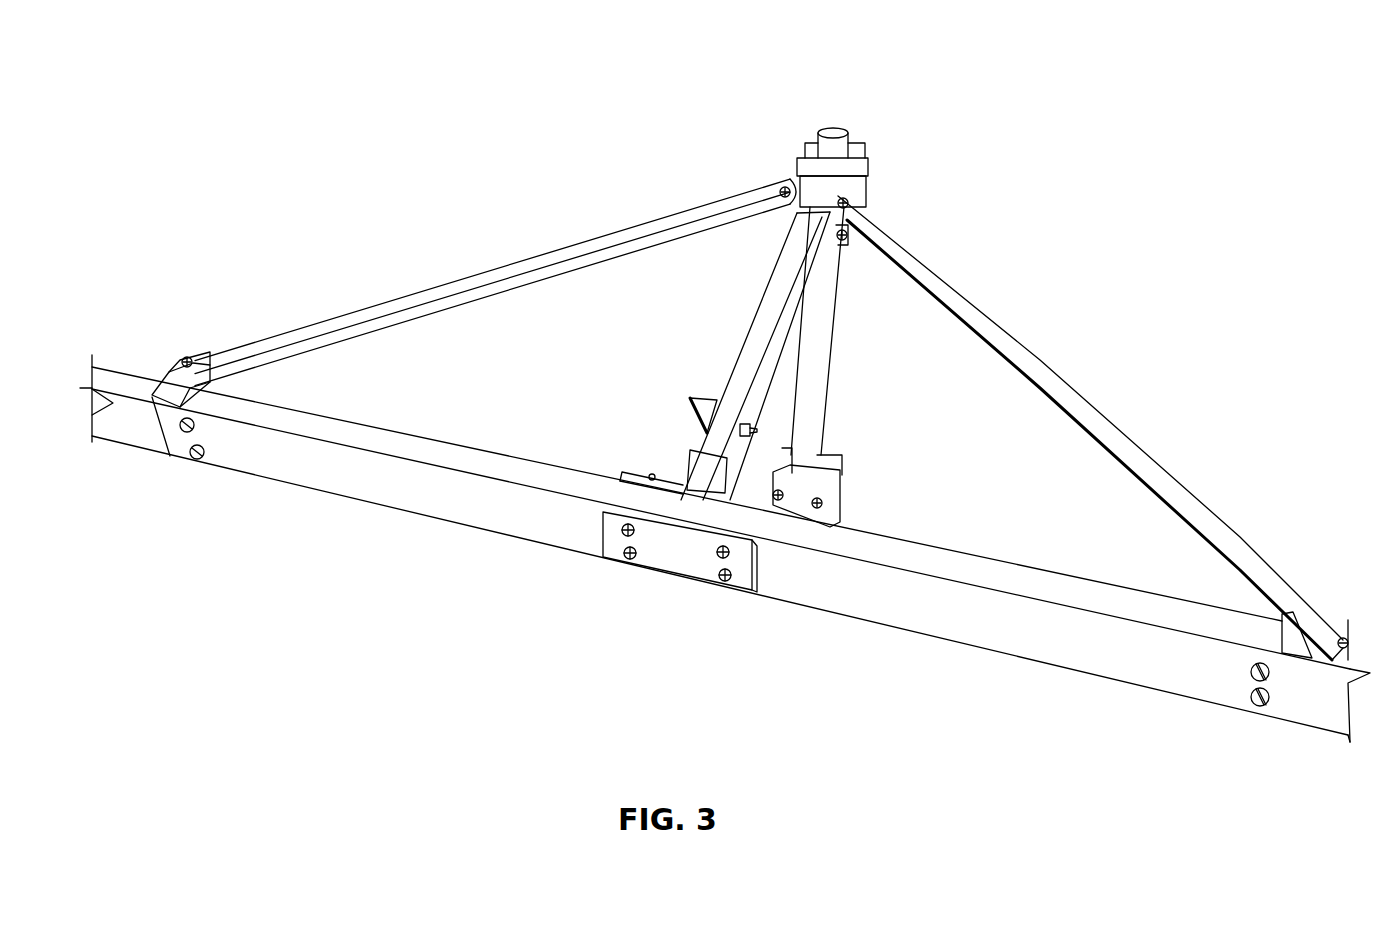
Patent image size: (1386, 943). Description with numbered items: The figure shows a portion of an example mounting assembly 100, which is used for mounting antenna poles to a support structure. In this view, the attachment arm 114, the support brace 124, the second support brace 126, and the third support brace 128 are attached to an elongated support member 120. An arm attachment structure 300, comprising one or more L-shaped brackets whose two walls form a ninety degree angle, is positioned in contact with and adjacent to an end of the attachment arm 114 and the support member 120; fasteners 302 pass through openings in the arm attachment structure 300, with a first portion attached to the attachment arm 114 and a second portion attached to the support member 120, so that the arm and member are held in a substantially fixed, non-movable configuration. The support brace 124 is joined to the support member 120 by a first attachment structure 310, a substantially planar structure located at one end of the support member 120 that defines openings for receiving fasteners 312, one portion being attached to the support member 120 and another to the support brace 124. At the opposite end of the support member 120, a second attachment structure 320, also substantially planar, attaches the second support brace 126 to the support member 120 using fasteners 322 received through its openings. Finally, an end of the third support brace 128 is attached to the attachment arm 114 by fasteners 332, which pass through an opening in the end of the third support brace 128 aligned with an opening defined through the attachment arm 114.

The mounting assembly 100 is at (402, 95).
The attachment arm 114 is at (775, 315).
The support member 120 is at (428, 488).
The support brace 124 is at (467, 283).
The second support brace 126 is at (1093, 425).
The third support brace 128 is at (705, 398).
The arm attachment structure 300 is at (722, 475).
The fasteners 302 is at (715, 470).
The first attachment structure 310 is at (170, 378).
The fasteners 312 is at (191, 356).
The second attachment structure 320 is at (1300, 635).
The fasteners 322 is at (1343, 630).
The fasteners 332 is at (757, 431).